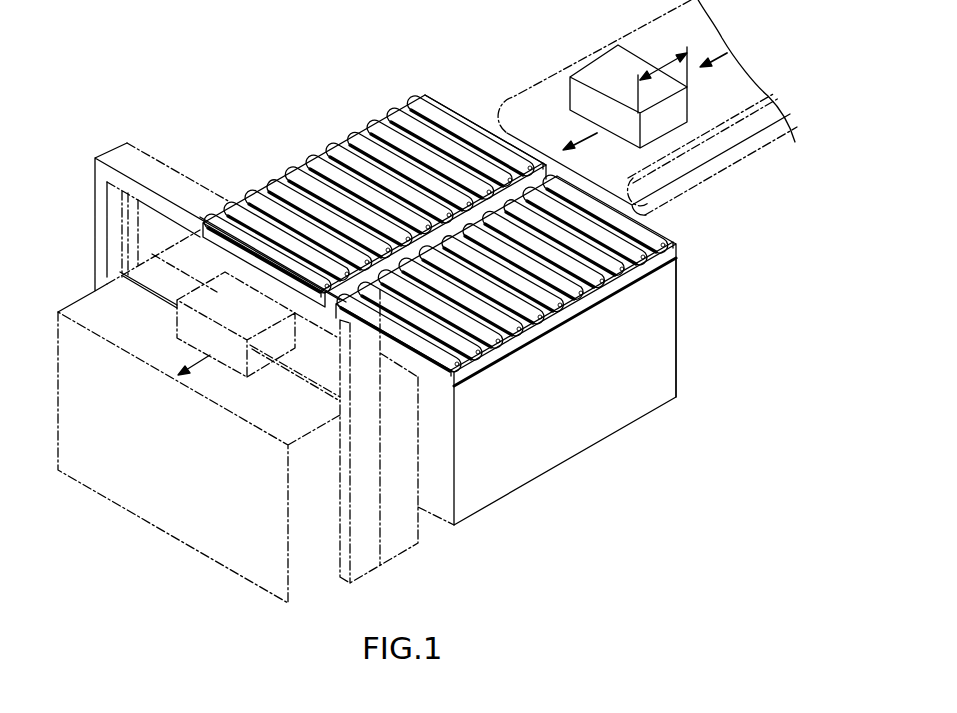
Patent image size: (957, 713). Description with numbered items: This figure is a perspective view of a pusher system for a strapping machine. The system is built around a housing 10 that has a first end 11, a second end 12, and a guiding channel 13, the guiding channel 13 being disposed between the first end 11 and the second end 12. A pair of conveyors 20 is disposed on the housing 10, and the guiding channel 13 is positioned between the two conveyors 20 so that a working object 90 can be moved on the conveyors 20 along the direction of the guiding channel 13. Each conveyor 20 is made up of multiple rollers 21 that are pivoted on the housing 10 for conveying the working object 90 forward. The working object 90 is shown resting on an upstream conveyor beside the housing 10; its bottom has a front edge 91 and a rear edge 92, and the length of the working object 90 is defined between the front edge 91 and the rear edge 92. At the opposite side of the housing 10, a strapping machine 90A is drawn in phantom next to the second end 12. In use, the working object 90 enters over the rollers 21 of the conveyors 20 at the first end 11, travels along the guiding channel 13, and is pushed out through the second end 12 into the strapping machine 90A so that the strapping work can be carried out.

The housing 10 is at (517, 488).
The first end 11 is at (675, 330).
The second end 12 is at (442, 490).
The guiding channel 13 is at (497, 157).
The conveyor 20 is at (289, 21).
The roller 21 is at (397, 307).
The working object 90 is at (596, 63).
The strapping machine 90A is at (143, 510).
The front edge 91 is at (620, 140).
The rear edge 92 is at (688, 118).